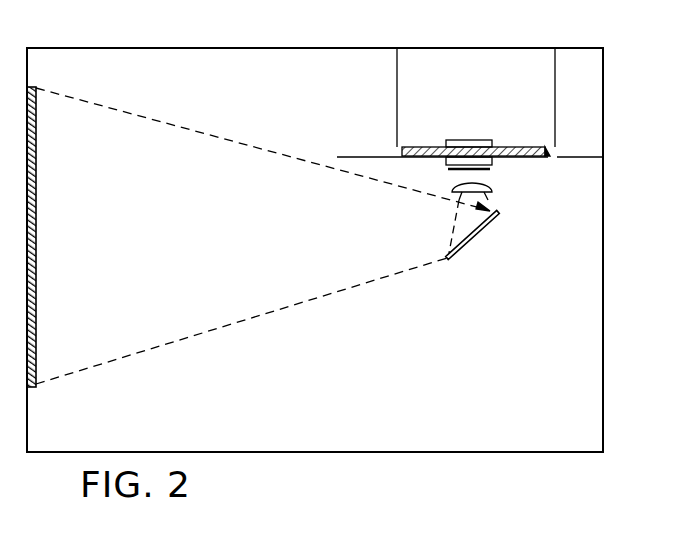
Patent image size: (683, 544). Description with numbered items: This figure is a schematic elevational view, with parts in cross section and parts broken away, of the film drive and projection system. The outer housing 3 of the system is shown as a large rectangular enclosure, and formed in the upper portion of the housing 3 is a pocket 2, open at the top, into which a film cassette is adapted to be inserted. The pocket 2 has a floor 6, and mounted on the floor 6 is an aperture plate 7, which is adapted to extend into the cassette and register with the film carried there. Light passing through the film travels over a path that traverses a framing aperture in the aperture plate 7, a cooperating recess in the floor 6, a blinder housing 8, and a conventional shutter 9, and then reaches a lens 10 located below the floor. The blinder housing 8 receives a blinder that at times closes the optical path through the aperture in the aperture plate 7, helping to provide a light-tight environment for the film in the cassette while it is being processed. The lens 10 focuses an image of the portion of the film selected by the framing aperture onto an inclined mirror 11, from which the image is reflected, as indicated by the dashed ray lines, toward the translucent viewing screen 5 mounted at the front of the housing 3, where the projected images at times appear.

The pocket 2 is at (454, 74).
The outer housing 3 is at (242, 48).
The translucent viewing screen 5 is at (36, 238).
The floor 6 is at (413, 147).
The aperture plate 7 is at (480, 140).
The blinder housing 8 is at (493, 161).
The shutter 9 is at (492, 171).
The lens 10 is at (489, 192).
The mirror 11 is at (466, 246).